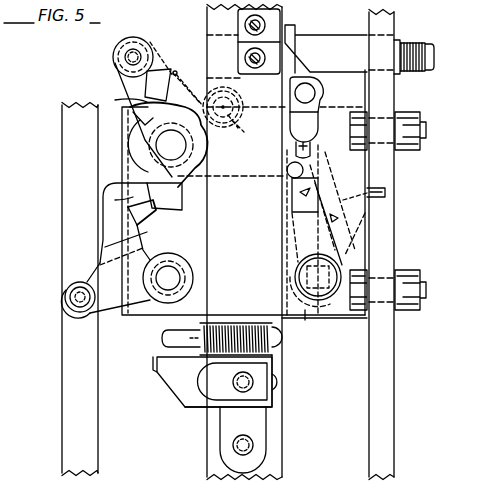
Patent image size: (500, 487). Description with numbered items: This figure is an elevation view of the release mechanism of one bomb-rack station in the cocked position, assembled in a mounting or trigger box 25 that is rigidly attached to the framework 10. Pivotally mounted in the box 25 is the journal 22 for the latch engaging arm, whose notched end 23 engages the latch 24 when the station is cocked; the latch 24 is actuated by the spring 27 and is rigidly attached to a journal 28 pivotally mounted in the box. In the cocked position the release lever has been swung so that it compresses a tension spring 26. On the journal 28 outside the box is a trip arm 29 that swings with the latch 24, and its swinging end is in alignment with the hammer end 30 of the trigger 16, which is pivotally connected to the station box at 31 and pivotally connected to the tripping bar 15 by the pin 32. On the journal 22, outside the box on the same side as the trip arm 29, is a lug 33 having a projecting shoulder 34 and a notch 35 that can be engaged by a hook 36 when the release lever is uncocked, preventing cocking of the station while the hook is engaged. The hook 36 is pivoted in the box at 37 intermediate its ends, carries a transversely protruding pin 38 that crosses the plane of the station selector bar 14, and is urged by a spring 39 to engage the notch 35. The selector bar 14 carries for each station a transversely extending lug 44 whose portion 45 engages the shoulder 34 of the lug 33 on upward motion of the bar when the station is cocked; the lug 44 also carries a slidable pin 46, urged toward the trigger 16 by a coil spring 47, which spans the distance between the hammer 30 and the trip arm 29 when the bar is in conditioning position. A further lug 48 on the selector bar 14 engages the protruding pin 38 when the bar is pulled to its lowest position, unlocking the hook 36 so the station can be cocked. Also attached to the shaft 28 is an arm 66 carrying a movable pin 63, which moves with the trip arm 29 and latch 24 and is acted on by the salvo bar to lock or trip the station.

The framework 10 is at (388, 400).
The station selector bar 14 is at (280, 450).
The tripping bar 15 is at (92, 438).
The trigger 16 is at (112, 256).
The journal 22 is at (208, 190).
The notch 23 is at (300, 192).
The latch 24 is at (367, 193).
The trigger box 25 is at (122, 320).
The tension spring 26 is at (413, 37).
The spring 27 is at (340, 254).
The journal 28 is at (303, 322).
The trip arm 29 is at (305, 192).
The hammer end 30 is at (135, 200).
The pivot 31 is at (175, 241).
The pin 32 is at (70, 303).
The lug 33 is at (182, 212).
The projecting shoulder 34 is at (146, 215).
The notch 35 is at (128, 107).
The hook 36 is at (116, 89).
The pivot 37 is at (275, 141).
The transversely protruding pin 38 is at (317, 96).
The spring 39 is at (238, 148).
The transversely extending lug 44 is at (212, 393).
The portion 45 is at (158, 360).
The slidable pin 46 is at (160, 340).
The coil spring 47 is at (274, 341).
The lug 48 is at (268, 17).
The movable pin 63 is at (326, 170).
The arm 66 is at (320, 139).